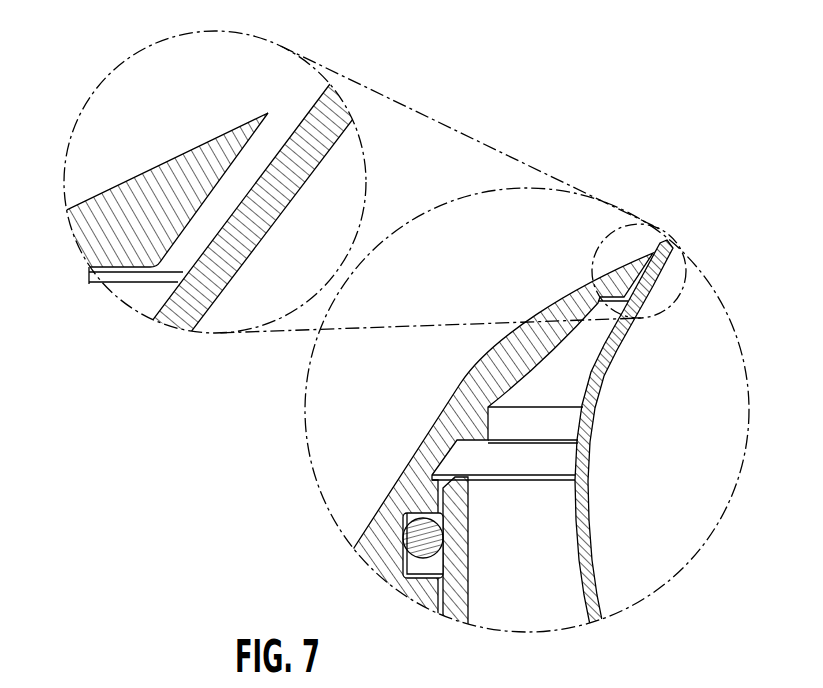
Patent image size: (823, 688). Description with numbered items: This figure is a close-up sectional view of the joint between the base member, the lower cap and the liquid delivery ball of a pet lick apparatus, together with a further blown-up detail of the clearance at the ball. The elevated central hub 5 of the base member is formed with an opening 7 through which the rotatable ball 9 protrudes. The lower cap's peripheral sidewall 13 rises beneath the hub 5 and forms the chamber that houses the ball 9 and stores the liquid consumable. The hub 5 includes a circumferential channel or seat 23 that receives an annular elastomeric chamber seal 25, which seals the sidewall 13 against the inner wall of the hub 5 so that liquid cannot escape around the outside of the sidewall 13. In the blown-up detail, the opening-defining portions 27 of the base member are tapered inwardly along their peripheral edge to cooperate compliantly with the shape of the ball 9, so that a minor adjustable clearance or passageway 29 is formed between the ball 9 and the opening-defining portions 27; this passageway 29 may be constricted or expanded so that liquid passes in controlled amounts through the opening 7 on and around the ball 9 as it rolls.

The central hub portion 5 is at (488, 385).
The opening 7 is at (661, 242).
The liquid delivery ball 9 is at (680, 424).
The peripheral sidewall 13 is at (452, 605).
The circumferential channel or seat 23 is at (418, 573).
The chamber seal 25 is at (422, 513).
The opening-defining portions 27 is at (616, 314).
The adjustable clearance or passageway 29 is at (245, 160).